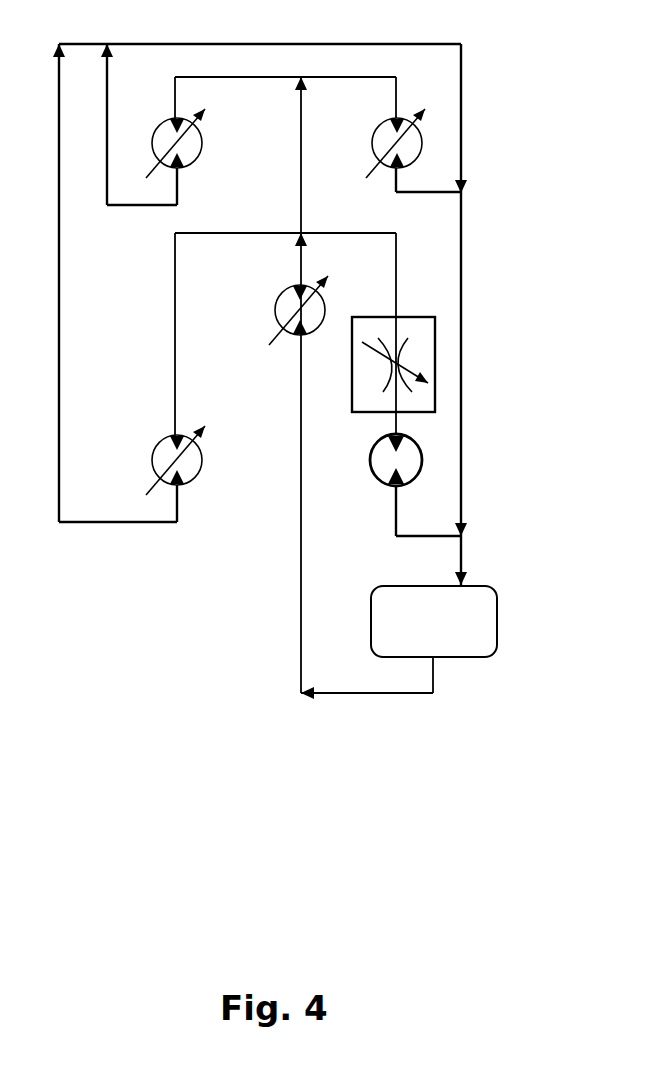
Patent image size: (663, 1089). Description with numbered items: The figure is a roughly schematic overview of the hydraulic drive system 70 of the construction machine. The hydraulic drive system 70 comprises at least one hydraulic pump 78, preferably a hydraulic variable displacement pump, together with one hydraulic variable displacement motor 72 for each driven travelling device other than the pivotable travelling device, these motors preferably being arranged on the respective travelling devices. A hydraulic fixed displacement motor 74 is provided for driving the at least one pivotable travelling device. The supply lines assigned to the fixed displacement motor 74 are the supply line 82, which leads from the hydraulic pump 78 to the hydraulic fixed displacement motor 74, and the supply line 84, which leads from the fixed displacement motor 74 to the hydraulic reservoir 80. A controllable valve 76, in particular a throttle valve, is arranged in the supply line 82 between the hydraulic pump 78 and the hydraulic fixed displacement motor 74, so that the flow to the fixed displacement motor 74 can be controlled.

The hydraulic drive system 70 is at (119, 640).
The hydraulic variable displacement motor 72 is at (192, 145).
The hydraulic fixed displacement motor 74 is at (405, 460).
The controllable valve 76 is at (425, 355).
The hydraulic pump 78 is at (277, 306).
The hydraulic reservoir 80 is at (483, 617).
The supply line 82 is at (396, 271).
The supply line 84 is at (412, 536).